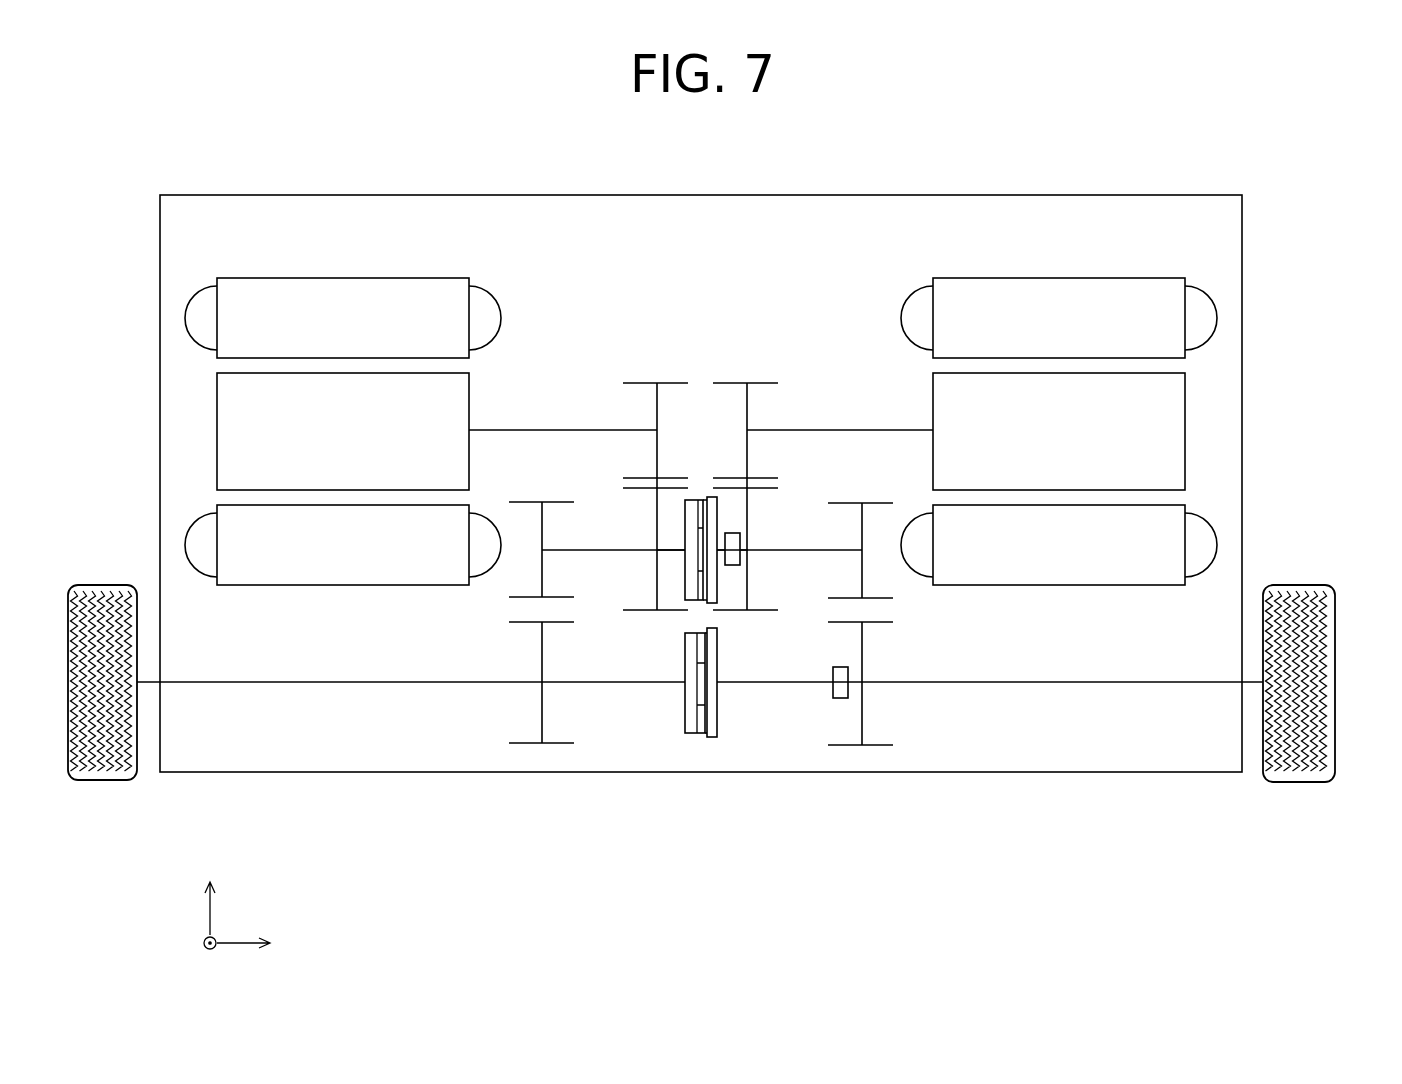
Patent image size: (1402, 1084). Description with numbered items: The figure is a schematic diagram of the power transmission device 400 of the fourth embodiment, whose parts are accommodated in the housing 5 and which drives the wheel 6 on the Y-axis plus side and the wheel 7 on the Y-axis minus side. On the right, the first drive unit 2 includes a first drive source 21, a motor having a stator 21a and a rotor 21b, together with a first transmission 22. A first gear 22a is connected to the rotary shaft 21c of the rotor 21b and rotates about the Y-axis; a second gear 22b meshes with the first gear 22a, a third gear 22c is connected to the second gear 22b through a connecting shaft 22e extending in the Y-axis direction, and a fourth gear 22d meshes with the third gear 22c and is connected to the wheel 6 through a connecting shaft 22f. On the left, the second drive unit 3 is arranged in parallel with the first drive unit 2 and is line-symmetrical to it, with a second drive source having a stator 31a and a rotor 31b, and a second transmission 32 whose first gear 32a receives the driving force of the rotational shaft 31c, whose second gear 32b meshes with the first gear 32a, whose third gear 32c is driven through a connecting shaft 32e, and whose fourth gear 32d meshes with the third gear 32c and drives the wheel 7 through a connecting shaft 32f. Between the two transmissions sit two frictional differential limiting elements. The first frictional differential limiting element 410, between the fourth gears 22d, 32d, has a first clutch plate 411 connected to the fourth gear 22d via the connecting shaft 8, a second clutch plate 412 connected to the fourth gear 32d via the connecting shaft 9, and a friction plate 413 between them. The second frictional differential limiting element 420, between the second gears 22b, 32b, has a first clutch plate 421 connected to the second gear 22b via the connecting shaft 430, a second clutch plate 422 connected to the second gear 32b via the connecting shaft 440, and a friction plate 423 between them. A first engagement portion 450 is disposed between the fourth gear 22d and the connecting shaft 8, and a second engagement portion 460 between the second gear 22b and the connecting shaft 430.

The power transmission device 400 is at (1218, 77).
The housing 5 is at (733, 195).
The second drive unit 3 is at (382, 268).
The stator 31a is at (203, 300).
The rotor 31b is at (225, 452).
The rotational shaft 31c is at (512, 430).
The first drive unit 2 is at (1135, 252).
The first drive source 21 is at (1203, 370).
The stator 21a is at (1198, 308).
The rotor 21b is at (1173, 420).
The rotary shaft 21c is at (895, 430).
The second transmission 32 is at (188, 382).
The first gear 32a is at (655, 407).
The second gear 32b is at (655, 523).
The third gear 32c is at (540, 575).
The fourth gear 32d is at (542, 652).
The connecting shaft 32e is at (597, 552).
The connecting shaft 32f is at (288, 680).
The first transmission 22 is at (780, 346).
The first gear 22a is at (750, 407).
The second gear 22b is at (750, 523).
The third gear 22c is at (865, 575).
The fourth gear 22d is at (862, 652).
The connecting shaft 22e is at (808, 552).
The connecting shaft 22f is at (1167, 680).
The second frictional differential limiting element 420 is at (696, 610).
The first clutch plate 421 is at (708, 497).
The second clutch plate 422 is at (693, 497).
The friction plate 423 is at (699, 497).
The first frictional differential limiting element 410 is at (687, 742).
The first clutch plate 411 is at (717, 722).
The second clutch plate 412 is at (685, 713).
The friction plate 413 is at (698, 736).
The connecting shaft 440 is at (680, 550).
The connecting shaft 430 is at (727, 562).
The second engagement portion 460 is at (732, 533).
The first engagement portion 450 is at (836, 698).
The connecting shaft 9 is at (614, 680).
The connecting shaft 8 is at (777, 680).
The wheel 7 is at (68, 657).
The wheel 6 is at (1337, 656).